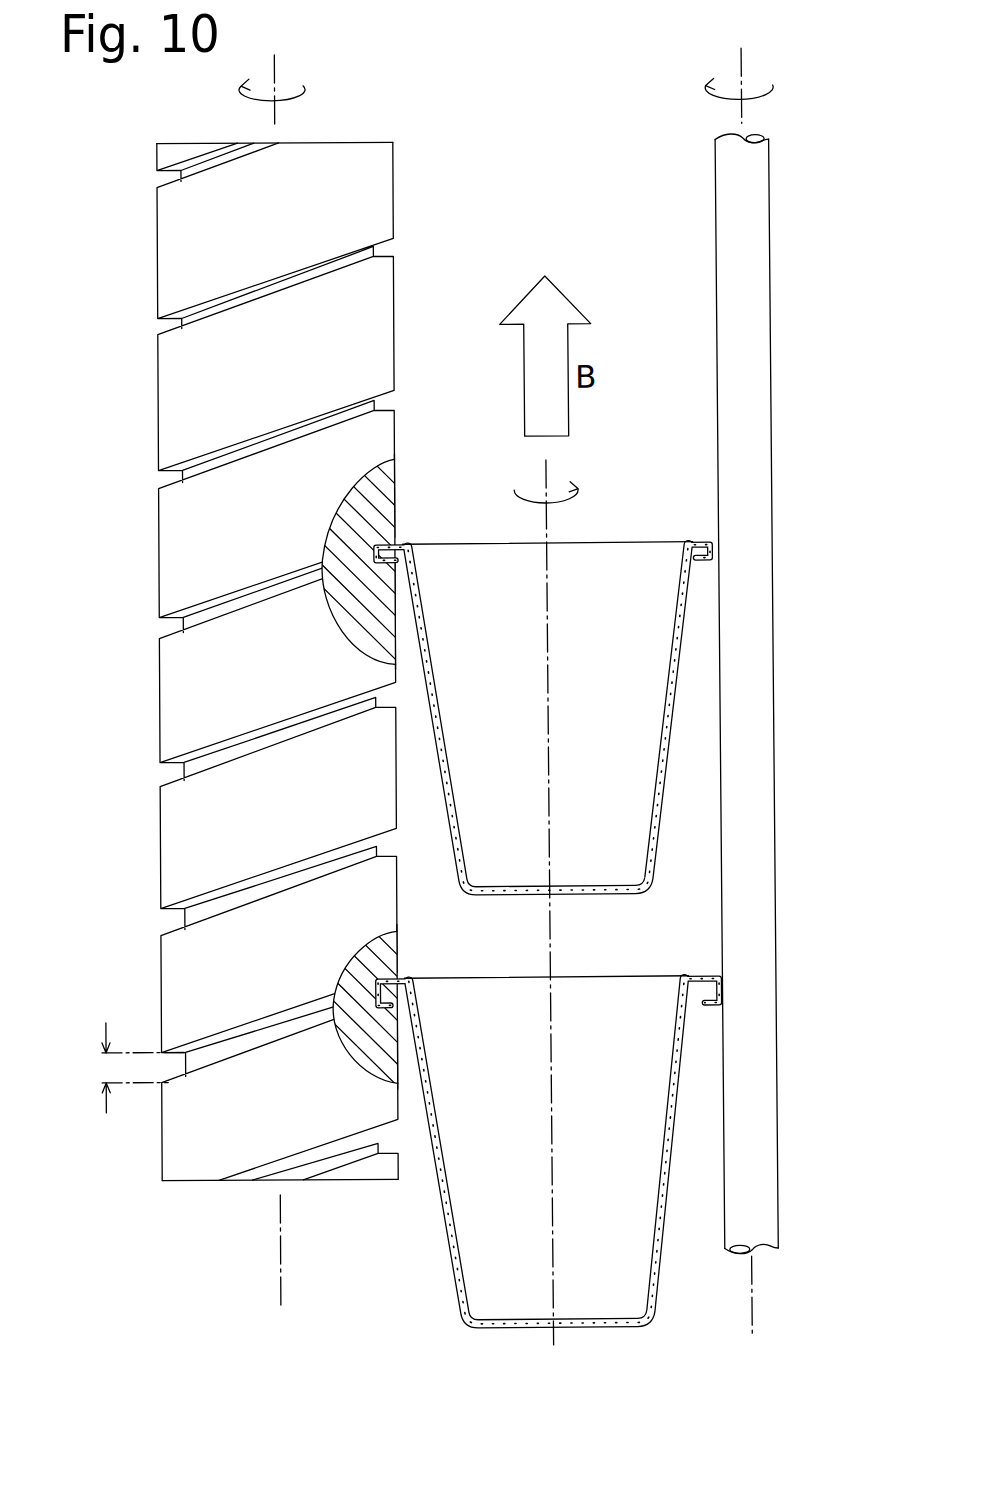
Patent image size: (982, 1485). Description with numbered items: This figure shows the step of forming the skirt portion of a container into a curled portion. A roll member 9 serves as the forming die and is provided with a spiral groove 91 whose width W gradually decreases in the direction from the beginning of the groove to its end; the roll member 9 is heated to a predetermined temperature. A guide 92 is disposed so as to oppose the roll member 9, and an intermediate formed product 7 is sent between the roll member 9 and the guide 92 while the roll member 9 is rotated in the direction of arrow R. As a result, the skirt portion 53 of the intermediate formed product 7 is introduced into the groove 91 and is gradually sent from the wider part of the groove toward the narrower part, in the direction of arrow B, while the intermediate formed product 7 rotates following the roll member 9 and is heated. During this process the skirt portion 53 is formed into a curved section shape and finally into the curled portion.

The roll member 9 is at (228, 680).
The spiral groove 91 is at (225, 455).
The skirt portion 53 is at (373, 556).
The intermediate formed product 7 is at (452, 840).
The guide 92 is at (775, 699).